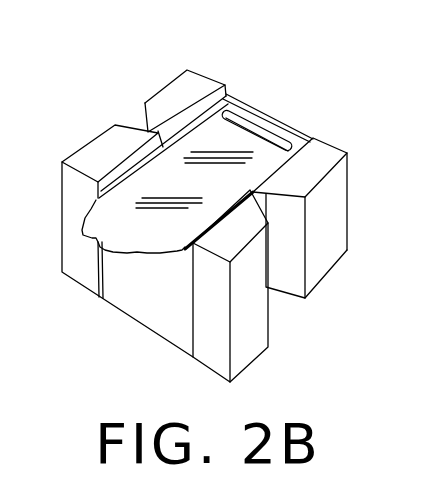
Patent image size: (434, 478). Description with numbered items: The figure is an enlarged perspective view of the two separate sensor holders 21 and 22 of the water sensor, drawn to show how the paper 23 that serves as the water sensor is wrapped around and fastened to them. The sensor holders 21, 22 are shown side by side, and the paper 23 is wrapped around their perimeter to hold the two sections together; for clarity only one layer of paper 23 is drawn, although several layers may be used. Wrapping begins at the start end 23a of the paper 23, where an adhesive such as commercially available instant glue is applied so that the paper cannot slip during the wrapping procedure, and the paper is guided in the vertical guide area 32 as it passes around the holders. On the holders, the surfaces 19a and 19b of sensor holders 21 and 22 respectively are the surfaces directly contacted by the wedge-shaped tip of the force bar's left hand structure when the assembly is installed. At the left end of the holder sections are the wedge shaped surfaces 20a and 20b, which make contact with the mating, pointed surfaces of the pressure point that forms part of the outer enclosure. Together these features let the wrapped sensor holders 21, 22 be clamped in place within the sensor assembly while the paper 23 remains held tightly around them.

The surface 19a is at (288, 207).
The surface 19b is at (268, 217).
The wedge shaped surface 20a is at (143, 108).
The wedge shaped surface 20b is at (132, 128).
The sensor holder 21 is at (187, 80).
The sensor holder 22 is at (90, 150).
The paper 23 is at (110, 222).
The start end 23a is at (242, 124).
The vertical guide area 32 is at (158, 293).